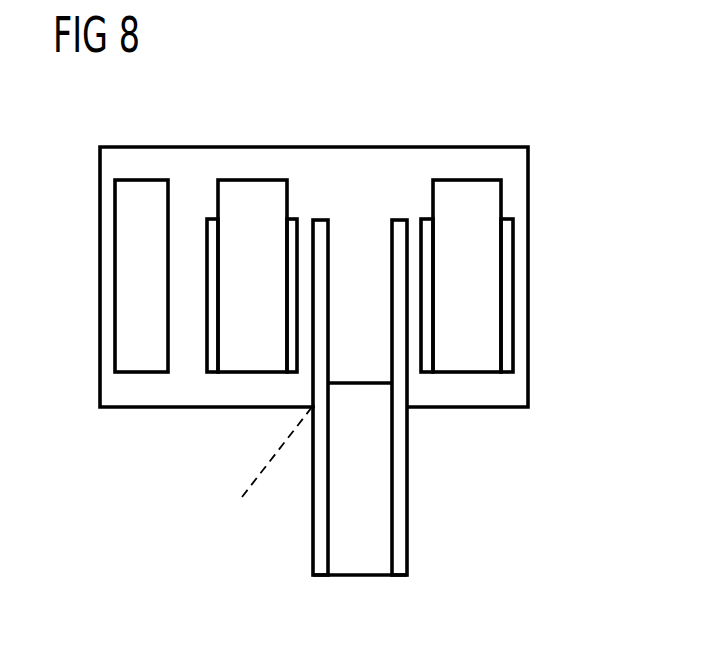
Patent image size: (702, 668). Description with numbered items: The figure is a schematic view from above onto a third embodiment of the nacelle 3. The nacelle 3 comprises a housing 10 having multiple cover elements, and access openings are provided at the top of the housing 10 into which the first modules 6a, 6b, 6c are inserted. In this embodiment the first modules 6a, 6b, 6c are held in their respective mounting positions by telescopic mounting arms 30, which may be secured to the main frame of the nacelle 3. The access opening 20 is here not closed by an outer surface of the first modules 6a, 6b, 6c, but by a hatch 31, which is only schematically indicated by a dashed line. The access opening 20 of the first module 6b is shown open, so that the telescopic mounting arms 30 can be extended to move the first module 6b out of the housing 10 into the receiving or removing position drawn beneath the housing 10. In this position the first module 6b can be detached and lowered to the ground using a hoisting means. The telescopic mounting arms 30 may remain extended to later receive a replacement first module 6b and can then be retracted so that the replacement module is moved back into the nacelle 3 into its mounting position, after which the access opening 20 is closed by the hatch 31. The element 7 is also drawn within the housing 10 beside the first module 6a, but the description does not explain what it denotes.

The nacelle 3 is at (548, 132).
The first slot/recess 7 is at (141, 193).
The first module 6a is at (247, 195).
The first module 6b is at (358, 560).
The first module 6c is at (460, 195).
The housing 10 is at (530, 313).
The access opening 20 is at (309, 410).
The telescopic mounting arm 30 is at (212, 243).
The hatch 31 is at (284, 439).